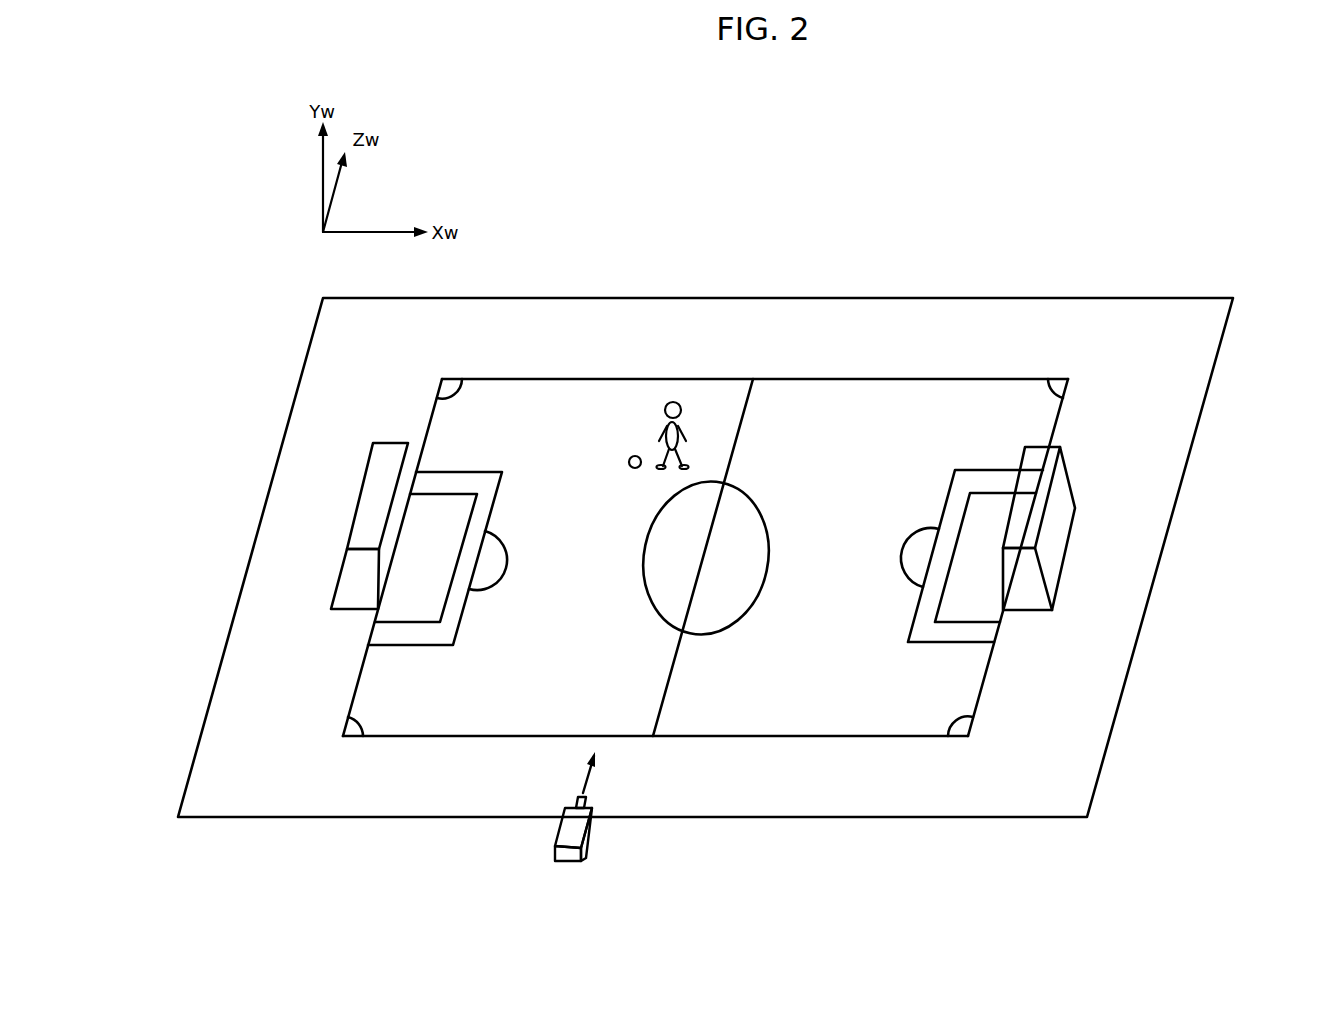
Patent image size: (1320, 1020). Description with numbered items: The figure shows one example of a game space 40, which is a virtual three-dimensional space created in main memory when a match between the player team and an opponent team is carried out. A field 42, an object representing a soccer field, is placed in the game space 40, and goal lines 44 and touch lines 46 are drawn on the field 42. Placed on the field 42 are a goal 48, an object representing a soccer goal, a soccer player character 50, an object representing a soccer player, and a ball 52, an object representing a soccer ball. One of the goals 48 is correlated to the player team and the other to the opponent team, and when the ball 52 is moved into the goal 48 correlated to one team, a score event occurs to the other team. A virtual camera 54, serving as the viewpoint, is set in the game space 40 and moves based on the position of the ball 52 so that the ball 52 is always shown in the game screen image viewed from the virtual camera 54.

The game space 40 is at (663, 187).
The field 42 is at (922, 312).
The goal lines 44 is at (360, 683).
The touch lines 46 is at (945, 380).
The goal 48 is at (335, 583).
The soccer player character 50 is at (672, 401).
The ball 52 is at (628, 462).
The virtual camera 54 is at (592, 828).